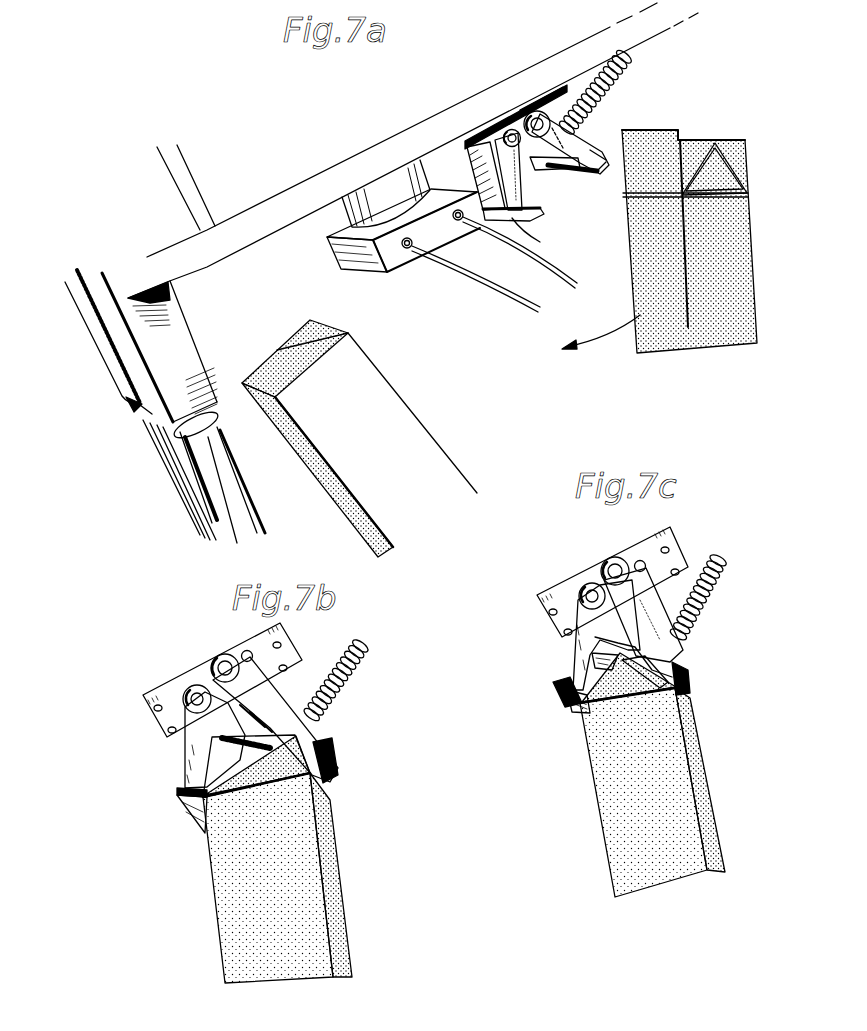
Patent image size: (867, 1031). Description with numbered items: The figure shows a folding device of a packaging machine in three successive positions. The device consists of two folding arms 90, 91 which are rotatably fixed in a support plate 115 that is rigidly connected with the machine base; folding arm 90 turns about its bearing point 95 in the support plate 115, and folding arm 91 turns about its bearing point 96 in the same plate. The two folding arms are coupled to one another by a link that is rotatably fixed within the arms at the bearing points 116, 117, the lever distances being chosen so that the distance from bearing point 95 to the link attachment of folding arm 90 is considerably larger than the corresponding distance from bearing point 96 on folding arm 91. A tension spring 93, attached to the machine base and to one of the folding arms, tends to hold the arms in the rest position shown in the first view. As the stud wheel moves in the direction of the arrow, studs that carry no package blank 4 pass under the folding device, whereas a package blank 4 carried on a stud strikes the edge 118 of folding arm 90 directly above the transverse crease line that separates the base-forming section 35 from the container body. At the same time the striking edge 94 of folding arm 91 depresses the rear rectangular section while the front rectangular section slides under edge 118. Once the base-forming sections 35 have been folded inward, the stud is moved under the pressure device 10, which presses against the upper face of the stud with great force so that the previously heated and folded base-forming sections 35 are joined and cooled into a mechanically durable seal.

In FIG. 7A, the package blank 4 is at (514, 343).
In FIG. 7B, the package blank 4 is at (228, 933).
In FIG. 7C, the package blank 4 is at (612, 813).
In FIG. 7A, the pressure device 10 is at (340, 265).
In FIG. 7A, the base-forming section 35 is at (743, 162).
In FIG. 7A, the folding arm 90 is at (528, 202).
In FIG. 7B, the folding arm 90 is at (197, 747).
In FIG. 7C, the folding arm 90 is at (578, 645).
In FIG. 7A, the folding arm 91 is at (605, 167).
In FIG. 7B, the folding arm 91 is at (328, 717).
In FIG. 7C, the folding arm 91 is at (682, 652).
In FIG. 7A, the tension spring 93 is at (605, 96).
In FIG. 7B, the tension spring 93 is at (363, 677).
In FIG. 7C, the tension spring 93 is at (708, 605).
In FIG. 7A, the striking edge 94 is at (578, 164).
In FIG. 7C, the striking edge 94 is at (687, 678).
In FIG. 7A, the bearing point 95 is at (507, 129).
In FIG. 7C, the bearing point 95 is at (580, 589).
In FIG. 7A, the bearing point 96 is at (533, 111).
In FIG. 7C, the bearing point 96 is at (611, 560).
In FIG. 7A, the support plate 115 is at (463, 140).
In FIG. 7B, the support plate 115 is at (177, 682).
In FIG. 7C, the support plate 115 is at (675, 550).
In FIG. 7B, the bearing point 116 is at (270, 712).
In FIG. 7B, the bearing point 117 is at (247, 650).
In FIG. 7C, the bearing point 117 is at (640, 560).
In FIG. 7A, the edge 118 is at (517, 220).
In FIG. 7C, the edge 118 is at (572, 700).